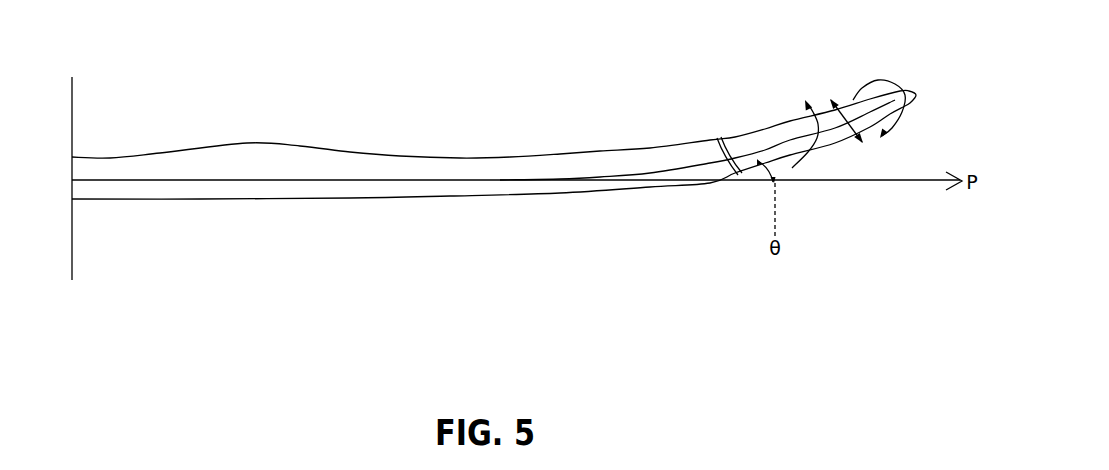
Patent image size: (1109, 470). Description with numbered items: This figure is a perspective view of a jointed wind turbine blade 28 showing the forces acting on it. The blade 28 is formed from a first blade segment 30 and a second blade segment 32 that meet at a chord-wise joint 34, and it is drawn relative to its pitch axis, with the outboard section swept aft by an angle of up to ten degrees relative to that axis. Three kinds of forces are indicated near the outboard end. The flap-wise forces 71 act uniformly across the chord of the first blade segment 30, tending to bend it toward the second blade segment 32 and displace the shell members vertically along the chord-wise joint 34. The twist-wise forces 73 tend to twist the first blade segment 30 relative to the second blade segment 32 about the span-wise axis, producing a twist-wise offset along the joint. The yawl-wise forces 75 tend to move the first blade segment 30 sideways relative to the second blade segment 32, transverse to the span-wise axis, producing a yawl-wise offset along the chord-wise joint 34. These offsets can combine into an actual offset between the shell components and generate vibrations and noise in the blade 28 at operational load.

The wind turbine blade 28 is at (482, 104).
The first blade segment 30 is at (834, 143).
The second blade segment 32 is at (447, 199).
The chord-wise joint 34 is at (718, 140).
The flap-wise forces 71 is at (812, 126).
The twist-wise forces 73 is at (880, 80).
The yawl-wise forces 75 is at (831, 99).